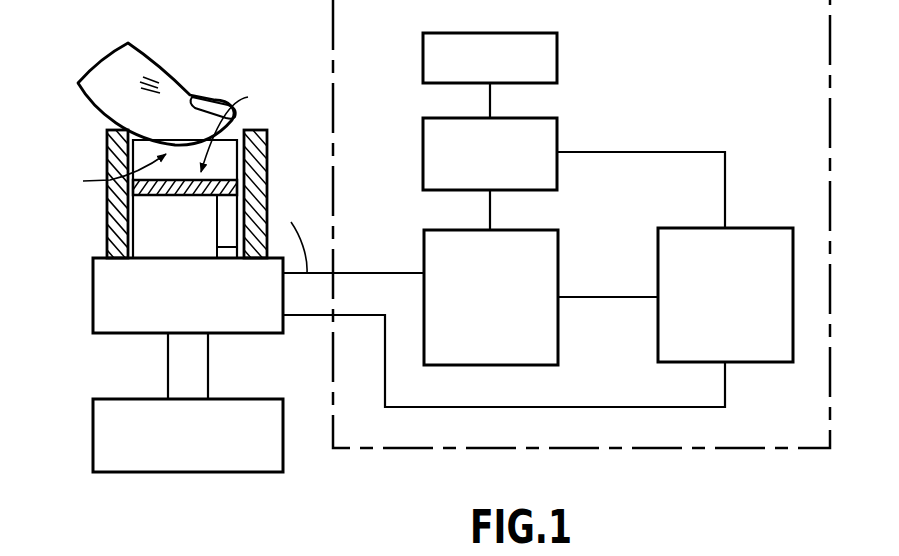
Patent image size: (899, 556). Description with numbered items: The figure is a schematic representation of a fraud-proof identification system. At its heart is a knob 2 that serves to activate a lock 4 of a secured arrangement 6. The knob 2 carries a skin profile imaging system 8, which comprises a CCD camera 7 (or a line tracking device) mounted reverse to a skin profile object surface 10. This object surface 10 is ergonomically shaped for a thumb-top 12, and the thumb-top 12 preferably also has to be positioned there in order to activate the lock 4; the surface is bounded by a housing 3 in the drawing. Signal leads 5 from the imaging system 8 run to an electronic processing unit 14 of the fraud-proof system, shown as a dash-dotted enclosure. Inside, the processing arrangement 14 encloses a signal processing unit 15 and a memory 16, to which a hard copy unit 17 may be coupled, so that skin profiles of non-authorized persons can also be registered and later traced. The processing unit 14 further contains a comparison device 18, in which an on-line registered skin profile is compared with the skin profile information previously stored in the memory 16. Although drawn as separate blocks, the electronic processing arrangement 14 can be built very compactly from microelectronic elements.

The knob 2 is at (88, 229).
The housing 3 is at (232, 157).
The lock 4 is at (105, 315).
The signal leads 5 is at (250, 247).
The secured arrangement 6 is at (103, 450).
The CCD camera 7 is at (238, 125).
The skin profile imaging system 8 is at (233, 172).
The skin profile object surface 10 is at (110, 176).
The thumb-top 12 is at (128, 60).
The electronic processing unit 14 is at (830, 137).
The signal processing unit 15 is at (542, 275).
The memory 16 is at (537, 145).
The hard copy unit 17 is at (543, 57).
The comparison device 18 is at (750, 255).